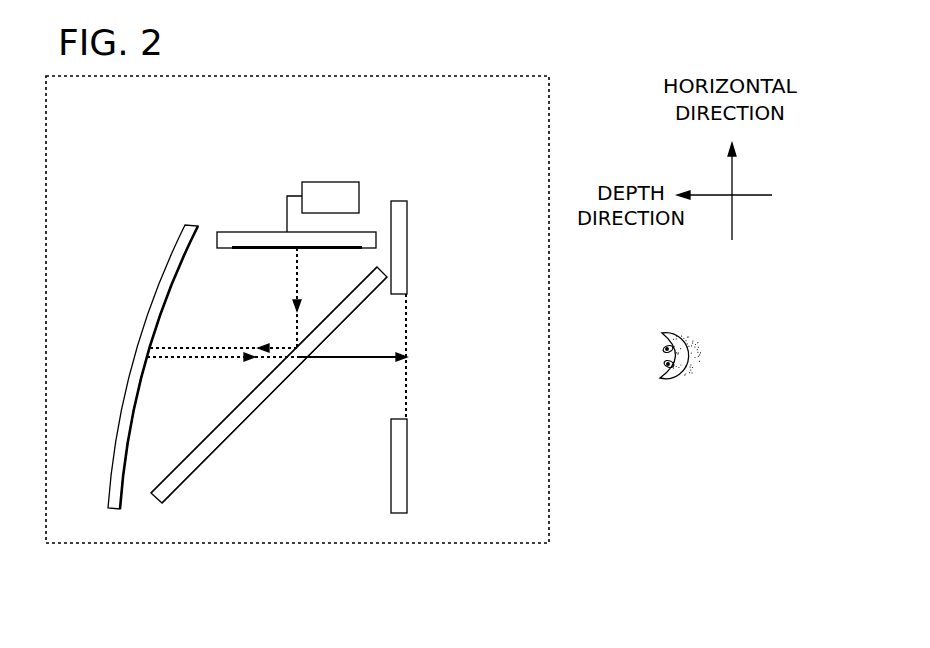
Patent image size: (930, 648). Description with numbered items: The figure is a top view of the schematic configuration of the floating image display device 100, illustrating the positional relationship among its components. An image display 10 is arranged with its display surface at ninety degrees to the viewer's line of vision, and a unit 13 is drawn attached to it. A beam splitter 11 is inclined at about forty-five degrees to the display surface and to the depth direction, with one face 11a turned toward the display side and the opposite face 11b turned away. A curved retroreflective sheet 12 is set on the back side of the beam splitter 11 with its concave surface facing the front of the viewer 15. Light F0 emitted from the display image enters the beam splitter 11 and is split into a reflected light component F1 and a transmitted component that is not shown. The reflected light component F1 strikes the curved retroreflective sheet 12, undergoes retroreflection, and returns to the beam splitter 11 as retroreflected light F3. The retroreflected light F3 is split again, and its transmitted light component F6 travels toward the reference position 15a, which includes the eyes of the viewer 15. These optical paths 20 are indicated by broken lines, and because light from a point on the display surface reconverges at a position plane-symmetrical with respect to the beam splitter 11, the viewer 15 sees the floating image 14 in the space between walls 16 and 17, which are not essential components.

The floating image display device 100 is at (282, 543).
The image display 10 is at (250, 232).
The control unit 13 is at (320, 182).
The beam splitter 11 is at (255, 410).
The first surface of half mirror 11a is at (182, 462).
The second surface of half mirror 11b is at (187, 478).
The curved retroreflective sheet 12 is at (187, 246).
The floating image 14 is at (407, 325).
The wall 17 is at (407, 233).
The wall 16 is at (407, 450).
The optical paths 20 is at (340, 358).
The viewer 15 is at (660, 373).
The reference position 15a is at (656, 354).
The light F0 is at (283, 298).
The reflected light component F1 is at (222, 335).
The retroreflected light F3 is at (201, 370).
The transmitted light component F6 is at (353, 370).